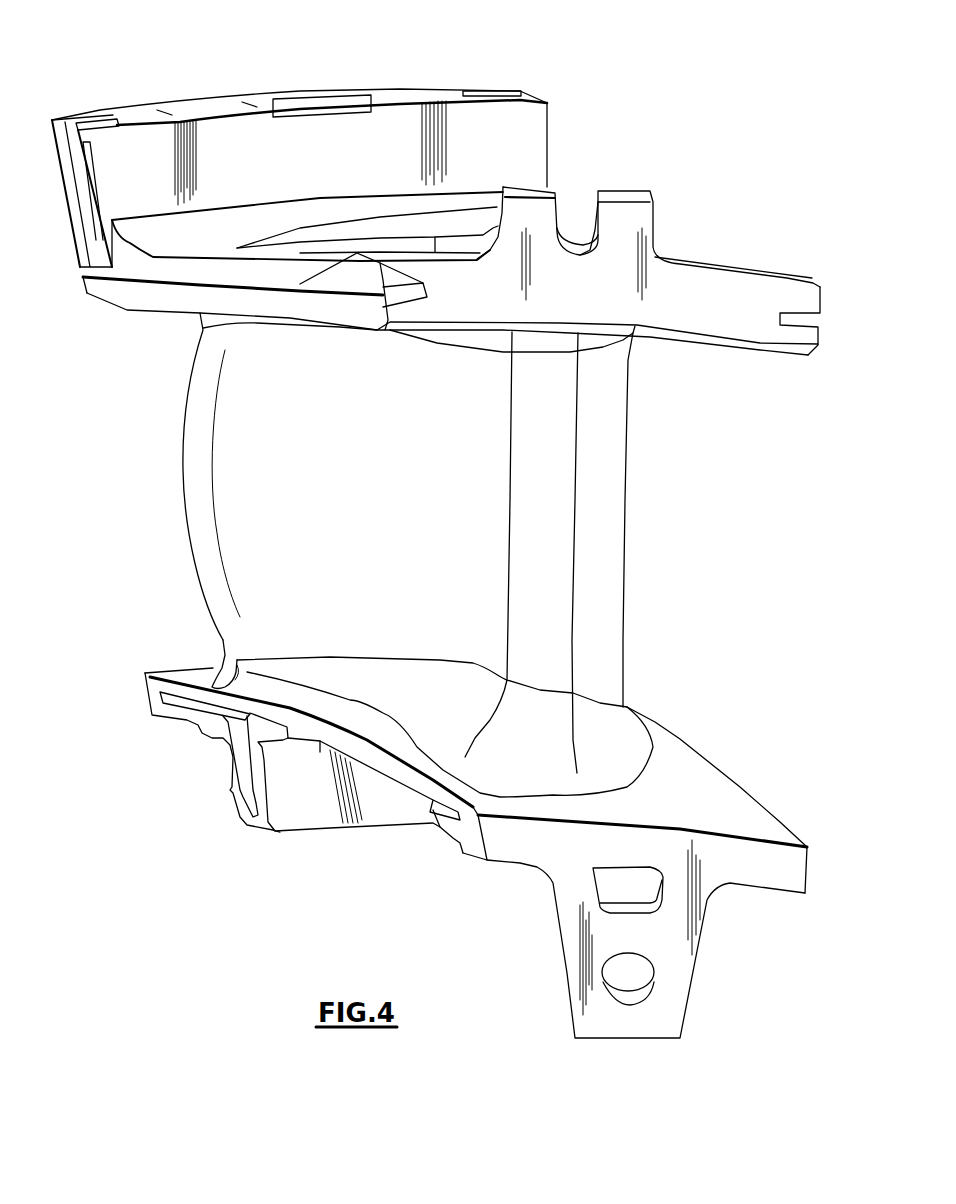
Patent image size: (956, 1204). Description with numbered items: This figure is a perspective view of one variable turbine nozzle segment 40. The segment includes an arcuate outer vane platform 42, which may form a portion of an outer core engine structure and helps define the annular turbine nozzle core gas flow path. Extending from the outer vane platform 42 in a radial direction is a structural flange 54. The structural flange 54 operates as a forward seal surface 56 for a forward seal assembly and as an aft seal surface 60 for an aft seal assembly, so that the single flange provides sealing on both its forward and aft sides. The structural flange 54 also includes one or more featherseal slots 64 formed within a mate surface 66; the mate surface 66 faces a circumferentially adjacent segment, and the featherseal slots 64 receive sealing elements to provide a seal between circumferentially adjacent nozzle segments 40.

The nozzle segment 40 is at (778, 489).
The outer vane platform 42 is at (596, 121).
The structural flange 54 is at (524, 86).
The forward seal surface 56 is at (123, 163).
The aft seal surface 60 is at (230, 97).
The featherseal slot 64 is at (87, 233).
The mate surface 66 is at (85, 123).